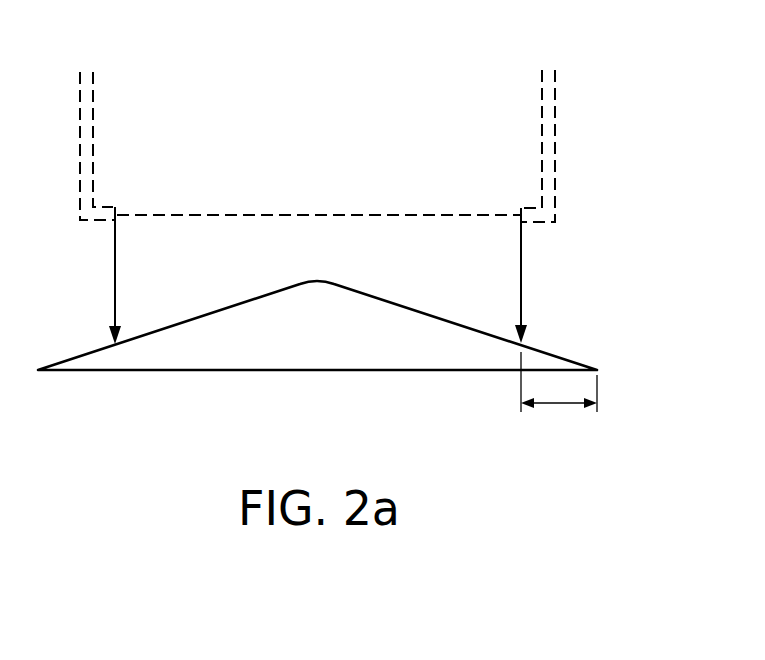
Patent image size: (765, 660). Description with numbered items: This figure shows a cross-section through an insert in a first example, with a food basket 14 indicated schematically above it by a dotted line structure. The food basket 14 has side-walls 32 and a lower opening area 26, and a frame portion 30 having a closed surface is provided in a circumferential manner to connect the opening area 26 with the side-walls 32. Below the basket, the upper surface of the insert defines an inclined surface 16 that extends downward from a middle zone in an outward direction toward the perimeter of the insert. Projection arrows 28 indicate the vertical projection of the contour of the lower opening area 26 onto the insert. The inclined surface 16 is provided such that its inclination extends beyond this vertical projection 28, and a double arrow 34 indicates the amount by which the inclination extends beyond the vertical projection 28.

The food basket 14 is at (611, 103).
The inclined surface 16 is at (165, 325).
The lower opening area 26 is at (308, 213).
The projection arrows 28 is at (113, 277).
The frame portion 30 is at (96, 208).
The side-walls 32 is at (94, 92).
The double arrow 34 is at (557, 405).